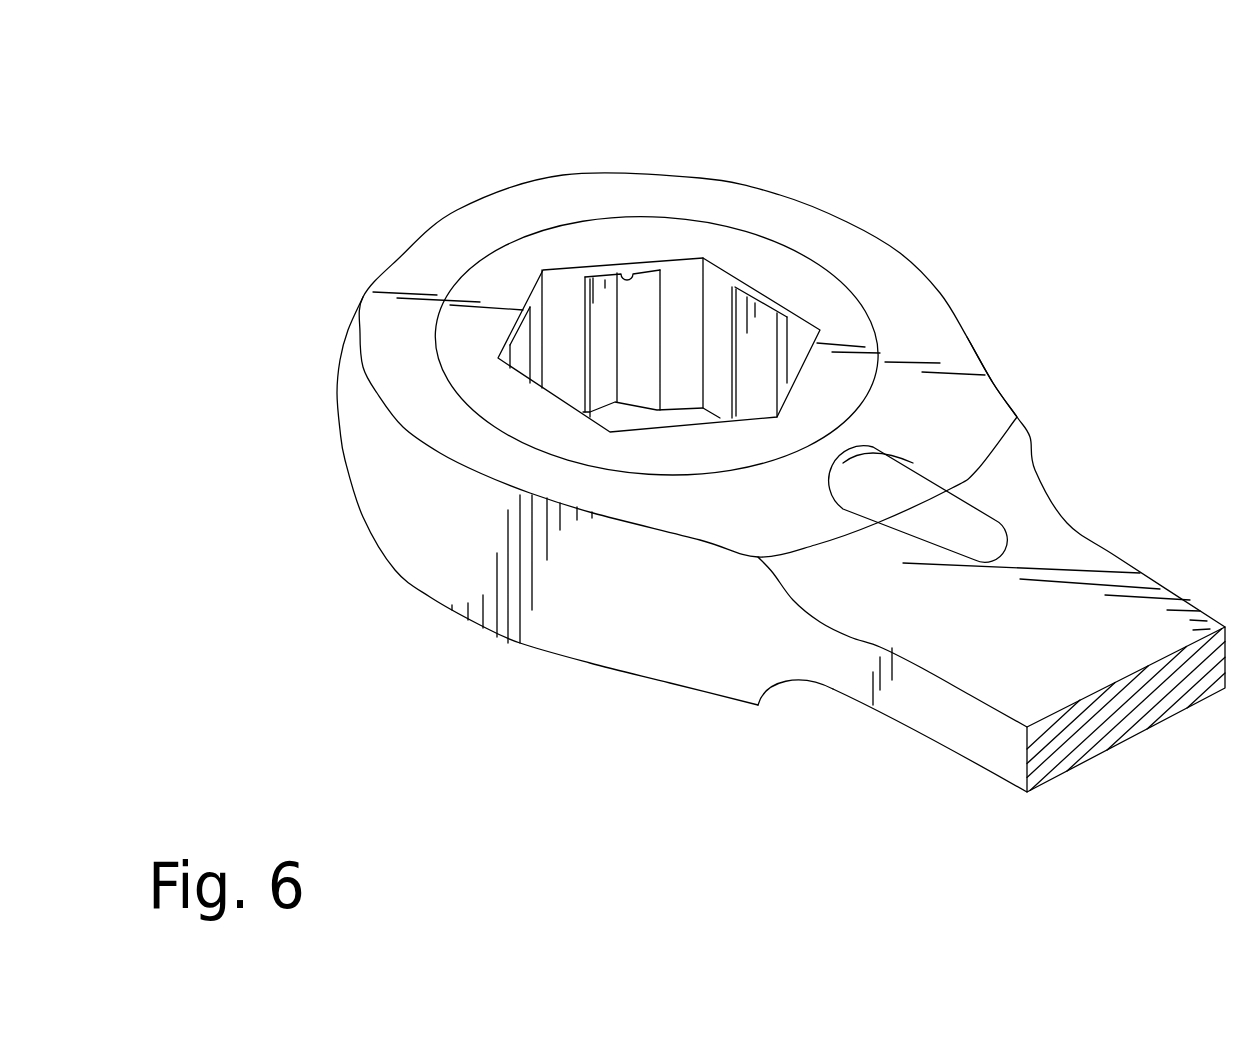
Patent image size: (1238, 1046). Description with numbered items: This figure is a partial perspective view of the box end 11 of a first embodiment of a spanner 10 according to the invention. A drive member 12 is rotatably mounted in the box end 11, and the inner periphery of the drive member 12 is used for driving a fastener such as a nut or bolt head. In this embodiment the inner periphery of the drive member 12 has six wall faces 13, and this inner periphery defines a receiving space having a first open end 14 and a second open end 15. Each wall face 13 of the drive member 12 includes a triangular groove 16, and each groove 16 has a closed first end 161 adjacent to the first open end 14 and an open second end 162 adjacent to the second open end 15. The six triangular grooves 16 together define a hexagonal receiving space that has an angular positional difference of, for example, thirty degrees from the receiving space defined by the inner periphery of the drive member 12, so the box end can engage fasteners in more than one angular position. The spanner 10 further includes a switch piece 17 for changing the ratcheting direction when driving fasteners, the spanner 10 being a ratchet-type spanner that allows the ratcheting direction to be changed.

The spanner 10 is at (1052, 377).
The box end 11 is at (630, 185).
The drive member 12 is at (762, 262).
The wall face 13 is at (557, 283).
The first open end 14 is at (684, 246).
The second open end 15 is at (440, 641).
The triangular groove 16 is at (760, 328).
The closed first end 161 is at (590, 272).
The open second end 162 is at (617, 413).
The switch piece 17 is at (962, 537).